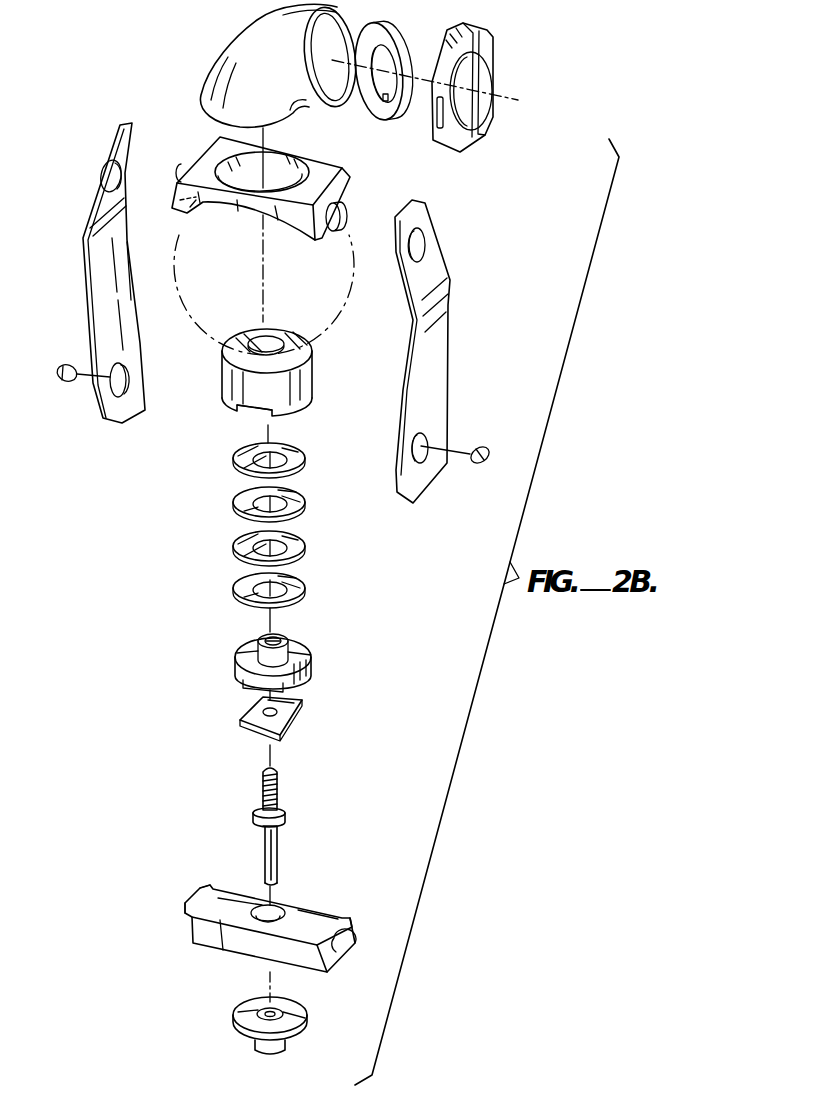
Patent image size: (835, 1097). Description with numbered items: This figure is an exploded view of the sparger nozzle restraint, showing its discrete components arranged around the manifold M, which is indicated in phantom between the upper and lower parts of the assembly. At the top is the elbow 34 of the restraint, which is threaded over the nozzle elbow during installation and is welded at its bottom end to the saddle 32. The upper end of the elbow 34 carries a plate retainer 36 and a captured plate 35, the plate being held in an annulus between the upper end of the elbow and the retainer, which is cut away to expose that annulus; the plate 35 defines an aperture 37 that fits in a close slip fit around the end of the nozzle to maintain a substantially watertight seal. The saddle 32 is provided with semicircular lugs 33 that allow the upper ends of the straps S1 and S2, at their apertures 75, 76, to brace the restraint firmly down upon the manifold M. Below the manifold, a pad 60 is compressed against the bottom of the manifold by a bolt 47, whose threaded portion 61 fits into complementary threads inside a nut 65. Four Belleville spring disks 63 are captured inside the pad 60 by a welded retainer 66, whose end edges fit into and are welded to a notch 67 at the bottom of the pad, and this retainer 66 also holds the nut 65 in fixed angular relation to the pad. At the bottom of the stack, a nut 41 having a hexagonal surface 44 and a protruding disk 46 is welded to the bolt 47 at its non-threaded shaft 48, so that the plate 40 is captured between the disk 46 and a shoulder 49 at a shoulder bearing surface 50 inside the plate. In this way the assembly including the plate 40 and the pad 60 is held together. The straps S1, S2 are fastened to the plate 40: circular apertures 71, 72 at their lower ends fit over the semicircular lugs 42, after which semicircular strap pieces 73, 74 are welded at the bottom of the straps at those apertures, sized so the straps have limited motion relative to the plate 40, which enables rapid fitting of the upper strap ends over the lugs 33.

The saddle 32 is at (322, 172).
The lugs 33 is at (178, 169).
The elbow 34 is at (262, 55).
The captured plate 35 is at (390, 32).
The plate retainer 36 is at (487, 31).
The aperture 37 is at (387, 99).
The plate 40 is at (315, 955).
The nut 41 is at (228, 898).
The semicircular lugs 42 is at (357, 942).
The hexagonal surface 44 is at (282, 1054).
The protruding disk 46 is at (240, 1039).
The bolt 47 is at (283, 853).
The non-threaded shaft 48 is at (278, 879).
The shoulder 49 is at (286, 818).
The shoulder bearing surface 50 is at (262, 903).
The pad 60 is at (313, 374).
The threaded portion 61 is at (277, 795).
The Belleville spring disks 63 is at (311, 447).
The nut 65 is at (312, 660).
The retainer 66 is at (303, 705).
The notch 67 is at (237, 409).
The circular aperture 71 is at (127, 377).
The circular aperture 72 is at (422, 445).
The semicircular strap piece 73 is at (487, 450).
The semicircular strap piece 74 is at (57, 373).
The aperture 75 is at (106, 167).
The aperture 76 is at (426, 233).
The strap S1 is at (83, 290).
The strap S2 is at (450, 333).
The manifold M is at (343, 338).